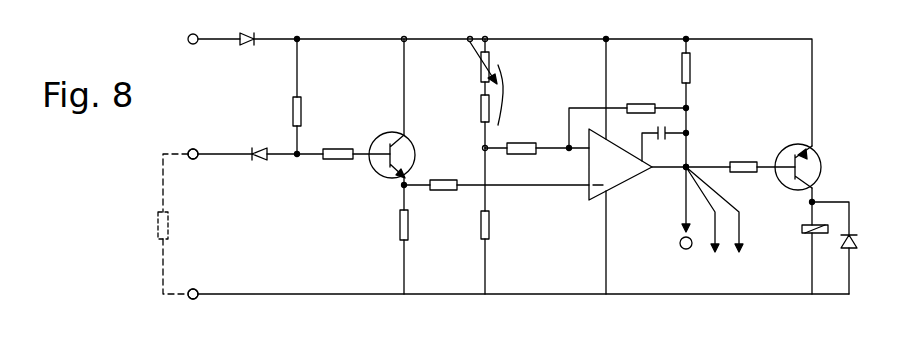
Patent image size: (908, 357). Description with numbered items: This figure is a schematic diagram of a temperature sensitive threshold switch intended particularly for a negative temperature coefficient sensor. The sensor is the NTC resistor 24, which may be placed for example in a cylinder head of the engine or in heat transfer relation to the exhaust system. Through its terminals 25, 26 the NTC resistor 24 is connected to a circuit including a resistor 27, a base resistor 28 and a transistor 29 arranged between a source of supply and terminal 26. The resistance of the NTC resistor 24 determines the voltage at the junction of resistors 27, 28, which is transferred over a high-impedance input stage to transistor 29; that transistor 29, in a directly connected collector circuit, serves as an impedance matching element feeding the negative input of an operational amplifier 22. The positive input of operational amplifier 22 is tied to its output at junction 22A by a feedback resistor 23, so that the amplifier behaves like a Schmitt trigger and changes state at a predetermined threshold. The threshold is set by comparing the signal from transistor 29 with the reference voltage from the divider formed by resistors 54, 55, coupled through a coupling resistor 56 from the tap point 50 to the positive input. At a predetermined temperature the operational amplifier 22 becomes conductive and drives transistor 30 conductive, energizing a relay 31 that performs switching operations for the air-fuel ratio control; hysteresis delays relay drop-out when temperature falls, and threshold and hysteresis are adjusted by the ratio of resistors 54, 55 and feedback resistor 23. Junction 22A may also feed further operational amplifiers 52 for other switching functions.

The operational amplifier 22 is at (624, 182).
The junction 22A is at (688, 163).
The feedback resistor 23 is at (638, 104).
The NTC resistor 24 is at (170, 226).
The terminal 25 is at (196, 149).
The terminal 26 is at (196, 300).
The resistor 27 is at (302, 110).
The base resistor 28 is at (343, 160).
The transistor 29 is at (409, 140).
The transistor 30 is at (817, 152).
The relay 31 is at (802, 229).
The tap point 50 is at (443, 180).
The further operational amplifiers 52 is at (688, 249).
The resistor 54 is at (508, 95).
The resistor 55 is at (490, 224).
The coupling resistor 56 is at (527, 122).